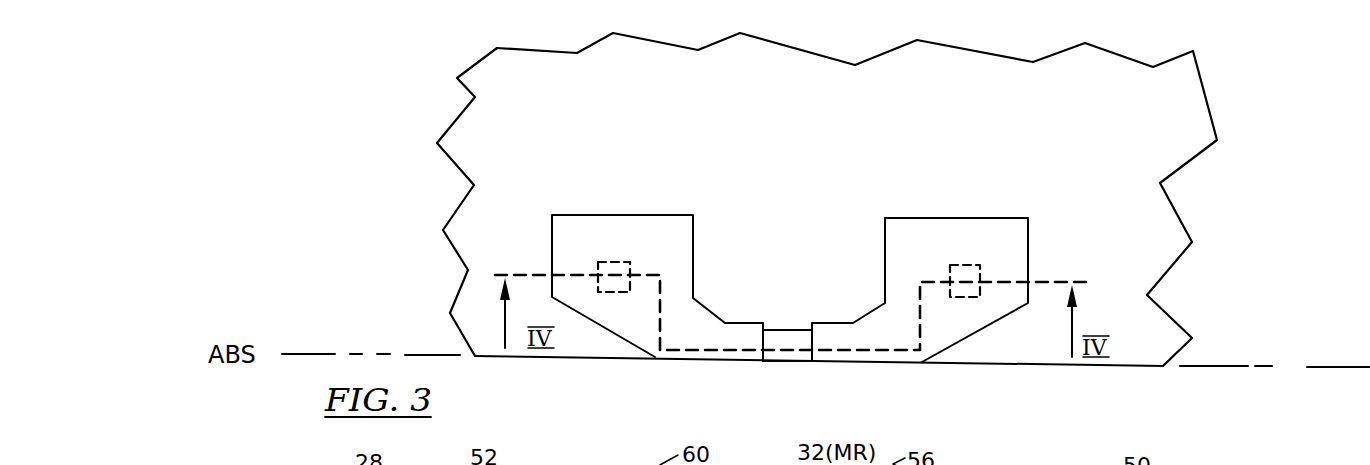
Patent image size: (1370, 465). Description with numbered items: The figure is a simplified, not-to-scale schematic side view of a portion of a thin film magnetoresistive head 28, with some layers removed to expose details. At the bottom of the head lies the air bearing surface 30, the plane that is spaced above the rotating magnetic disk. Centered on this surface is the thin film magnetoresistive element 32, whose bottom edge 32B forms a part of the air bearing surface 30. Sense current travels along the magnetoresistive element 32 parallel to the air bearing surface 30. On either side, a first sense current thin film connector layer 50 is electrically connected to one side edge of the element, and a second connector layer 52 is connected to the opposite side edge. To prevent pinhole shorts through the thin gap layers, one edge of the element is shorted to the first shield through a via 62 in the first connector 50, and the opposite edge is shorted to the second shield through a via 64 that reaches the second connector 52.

The magnetic head 28 is at (404, 131).
The air bearing surface 30 is at (1280, 367).
The thin film magnetoresistive element 32 is at (788, 340).
The bottom edge 32B is at (782, 362).
The first sense current thin film connector layer 50 is at (970, 323).
The second sense current thin film connector layer 52 is at (608, 318).
The via 62 is at (965, 265).
The via 64 is at (614, 262).